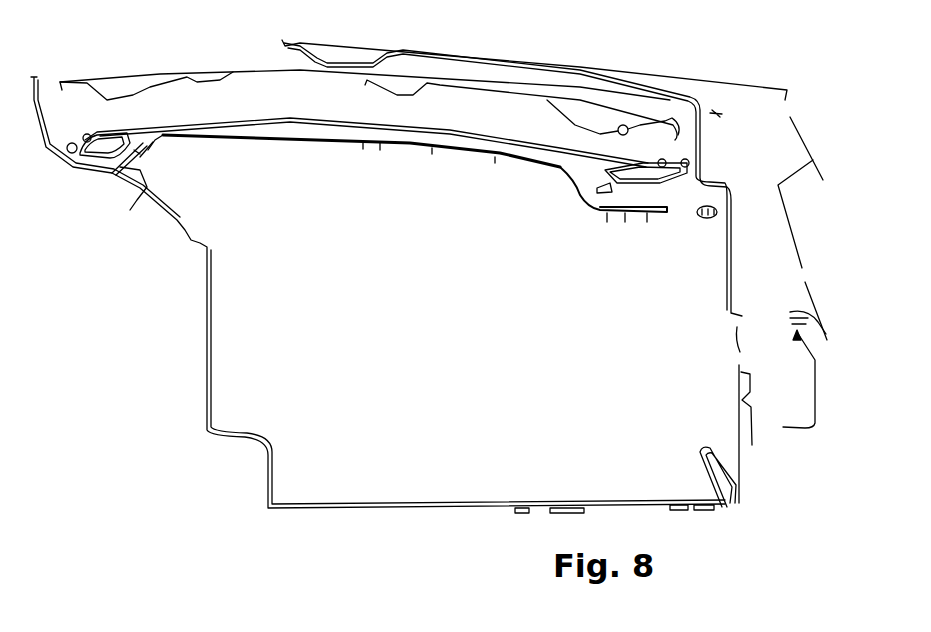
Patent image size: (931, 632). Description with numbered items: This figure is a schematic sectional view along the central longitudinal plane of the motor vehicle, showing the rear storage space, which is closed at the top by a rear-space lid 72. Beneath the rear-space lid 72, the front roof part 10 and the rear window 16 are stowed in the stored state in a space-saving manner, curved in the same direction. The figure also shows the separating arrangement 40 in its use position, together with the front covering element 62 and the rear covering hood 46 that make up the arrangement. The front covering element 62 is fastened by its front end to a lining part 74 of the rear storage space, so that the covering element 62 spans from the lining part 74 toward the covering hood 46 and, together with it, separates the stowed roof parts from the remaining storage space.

The front roof part 10 is at (157, 78).
The rear window 16 is at (208, 118).
The rear-space lid 72 is at (588, 63).
The front covering element 62 is at (282, 137).
The rear covering hood 46 is at (563, 180).
The lining part 74 is at (142, 175).
The separating arrangement 40 is at (370, 150).